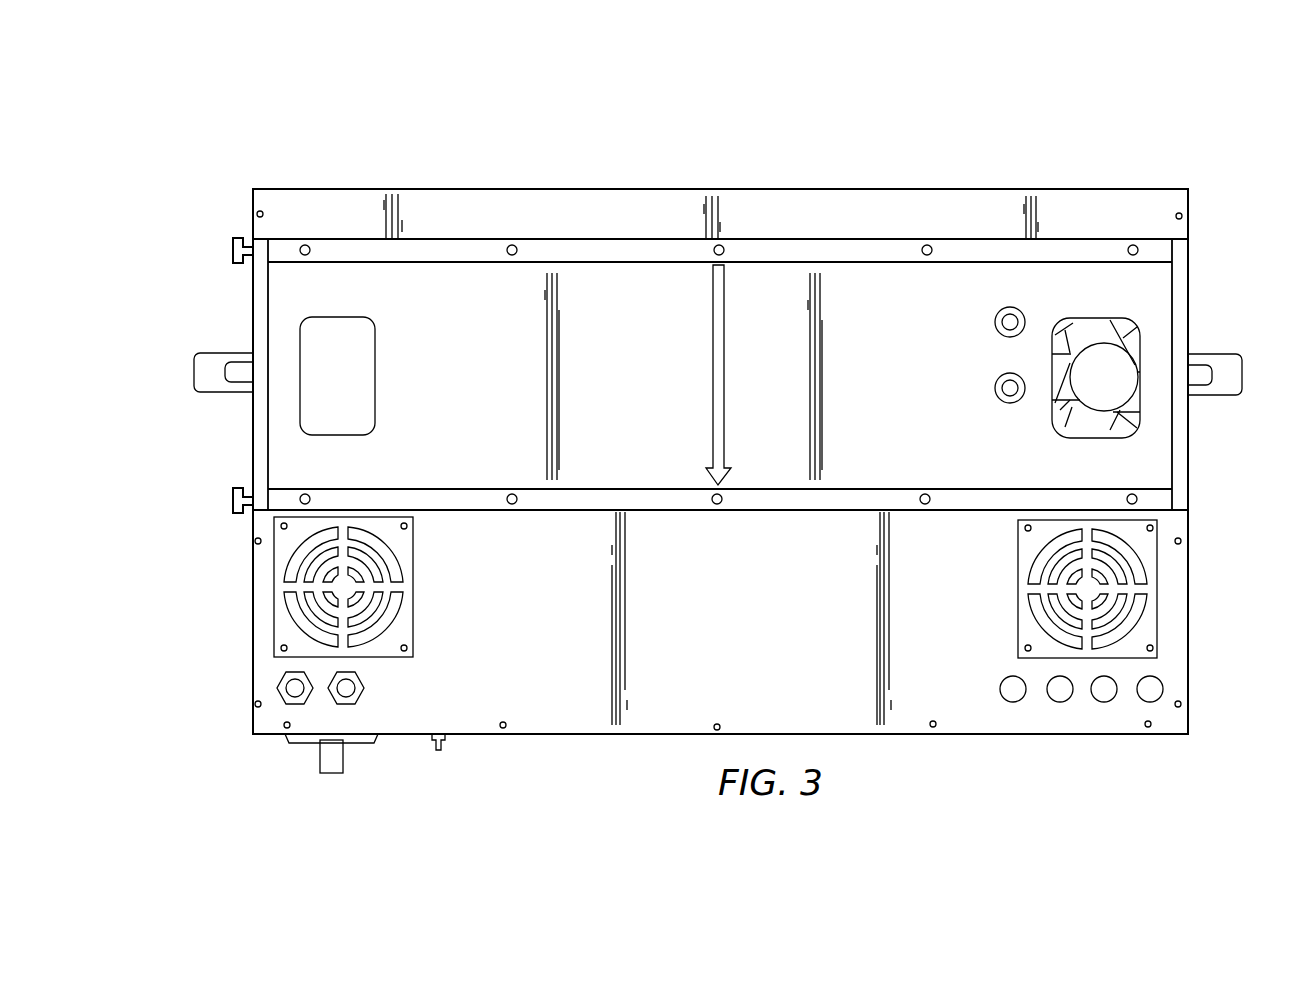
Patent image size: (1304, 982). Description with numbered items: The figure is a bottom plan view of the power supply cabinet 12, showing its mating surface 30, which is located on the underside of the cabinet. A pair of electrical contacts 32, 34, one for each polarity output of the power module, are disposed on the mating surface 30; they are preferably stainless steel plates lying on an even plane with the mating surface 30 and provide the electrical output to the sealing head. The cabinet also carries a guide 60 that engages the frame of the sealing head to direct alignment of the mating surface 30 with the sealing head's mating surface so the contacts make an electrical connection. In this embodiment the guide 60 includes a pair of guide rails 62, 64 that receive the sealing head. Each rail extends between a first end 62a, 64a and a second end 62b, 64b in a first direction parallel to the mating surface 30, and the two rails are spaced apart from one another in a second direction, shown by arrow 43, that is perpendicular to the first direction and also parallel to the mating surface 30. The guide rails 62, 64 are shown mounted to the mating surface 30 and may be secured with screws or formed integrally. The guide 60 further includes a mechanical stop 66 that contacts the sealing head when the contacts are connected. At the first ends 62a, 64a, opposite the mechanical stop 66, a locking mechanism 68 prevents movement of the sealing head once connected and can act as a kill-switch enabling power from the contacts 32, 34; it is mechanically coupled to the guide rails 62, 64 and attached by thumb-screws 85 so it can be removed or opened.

The power supply cabinet 12 is at (967, 115).
The mating surface 30 is at (782, 272).
The electrical contact 32 is at (995, 320).
The electrical contact 34 is at (995, 386).
The arrow indicating second direction 43 is at (712, 380).
The guide 60 is at (650, 236).
The guide rail 62 is at (542, 237).
The first end of guide rail 62a is at (262, 243).
The second end of guide rail 62b is at (1173, 253).
The guide rail 64 is at (568, 515).
The first end of guide rail 64a is at (252, 508).
The second end of guide rail 64b is at (1173, 502).
The mechanical stop 66 is at (1177, 450).
The locking mechanism 68 is at (252, 440).
The thumb-screws 85 is at (233, 250).